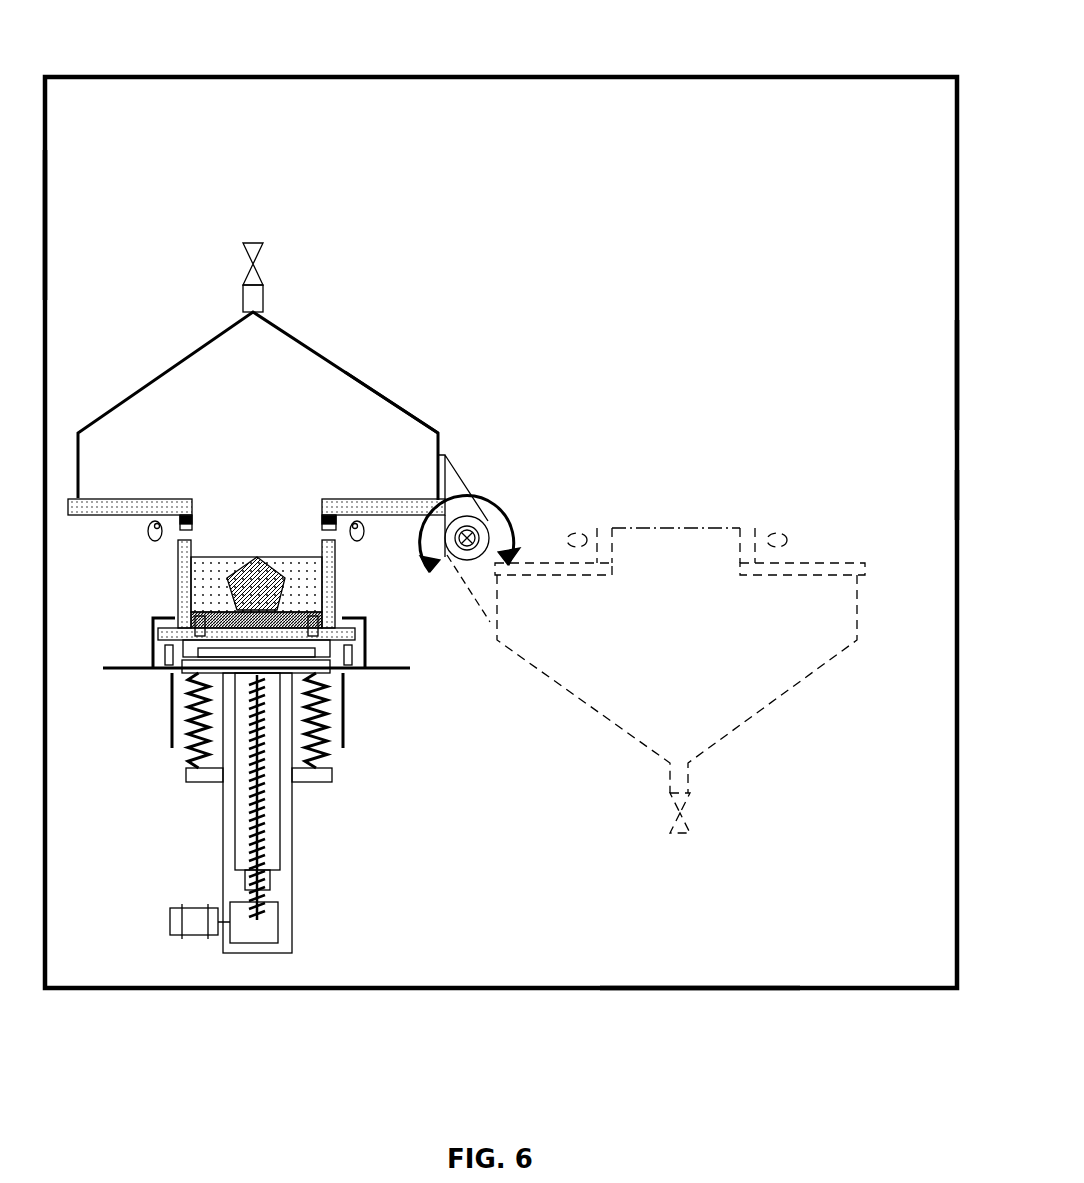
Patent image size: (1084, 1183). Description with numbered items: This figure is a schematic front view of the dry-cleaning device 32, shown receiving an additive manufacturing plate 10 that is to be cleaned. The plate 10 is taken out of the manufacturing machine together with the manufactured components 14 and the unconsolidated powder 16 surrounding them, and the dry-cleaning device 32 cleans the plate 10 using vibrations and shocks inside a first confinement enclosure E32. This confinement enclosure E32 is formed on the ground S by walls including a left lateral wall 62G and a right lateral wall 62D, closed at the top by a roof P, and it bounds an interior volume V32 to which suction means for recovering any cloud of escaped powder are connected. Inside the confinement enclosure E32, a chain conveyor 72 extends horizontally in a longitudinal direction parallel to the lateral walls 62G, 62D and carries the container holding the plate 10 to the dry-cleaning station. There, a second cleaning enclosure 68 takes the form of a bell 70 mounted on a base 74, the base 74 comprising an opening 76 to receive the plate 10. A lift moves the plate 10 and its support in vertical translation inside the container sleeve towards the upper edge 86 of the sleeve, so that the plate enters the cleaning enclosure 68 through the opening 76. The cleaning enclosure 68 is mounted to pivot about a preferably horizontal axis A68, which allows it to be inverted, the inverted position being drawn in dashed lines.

The roof P is at (440, 77).
The dry-cleaning device 32 is at (588, 998).
The right lateral wall 62D is at (47, 209).
The left lateral wall 62G is at (957, 398).
The first confinement enclosure E32 is at (957, 497).
The ground S is at (728, 990).
The interior volume V32 is at (830, 910).
The second cleaning enclosure 68 is at (346, 353).
The bell 70 is at (388, 400).
The base 74 is at (370, 502).
The opening 76 is at (306, 508).
The upper edge 86 is at (182, 538).
The plate 10 is at (317, 618).
The unconsolidated powder 16 is at (300, 585).
The manufactured components 14 is at (242, 582).
The chain conveyor 72 is at (158, 658).
The pivot axis A68 is at (467, 528).